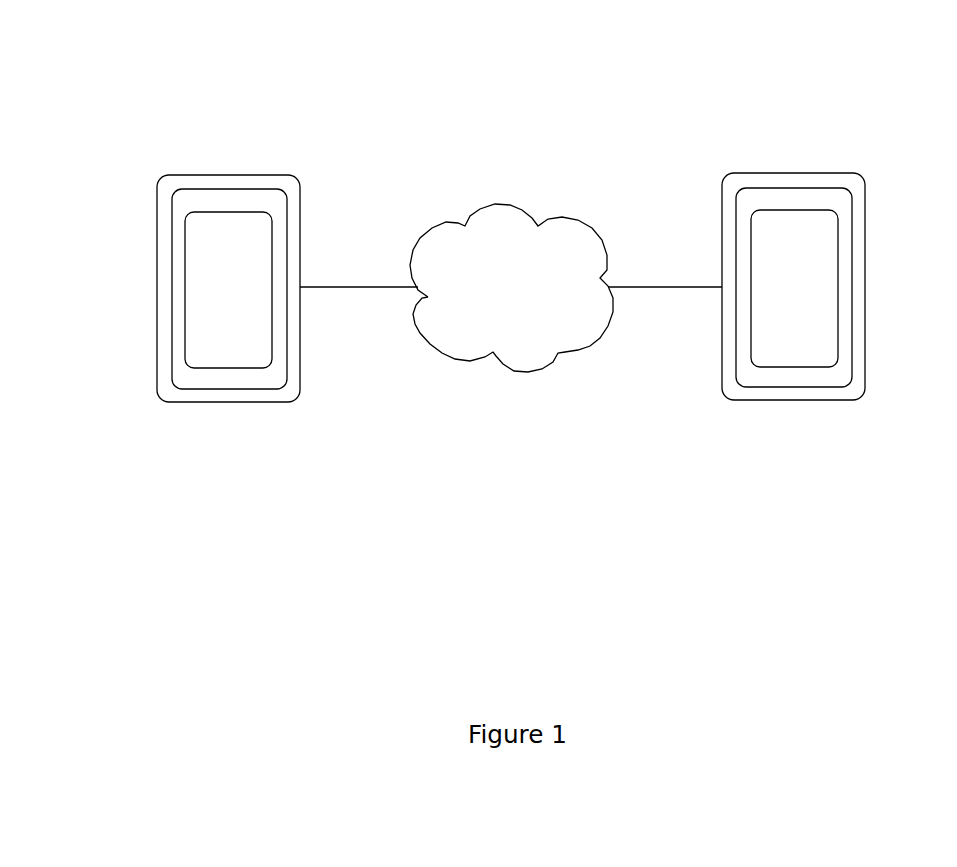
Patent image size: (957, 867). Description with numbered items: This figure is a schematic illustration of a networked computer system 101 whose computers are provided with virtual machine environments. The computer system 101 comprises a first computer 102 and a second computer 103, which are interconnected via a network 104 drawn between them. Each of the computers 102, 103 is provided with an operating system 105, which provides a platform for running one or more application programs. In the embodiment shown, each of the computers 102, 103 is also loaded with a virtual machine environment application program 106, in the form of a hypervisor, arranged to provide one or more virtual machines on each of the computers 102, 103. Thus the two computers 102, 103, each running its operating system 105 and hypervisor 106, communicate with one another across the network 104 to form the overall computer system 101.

The computer system 101 is at (377, 70).
The first computer 102 is at (227, 175).
The second computer 103 is at (793, 173).
The network 104 is at (465, 360).
The operating system 105 is at (228, 389).
The virtual machine environment application program 106 is at (185, 288).